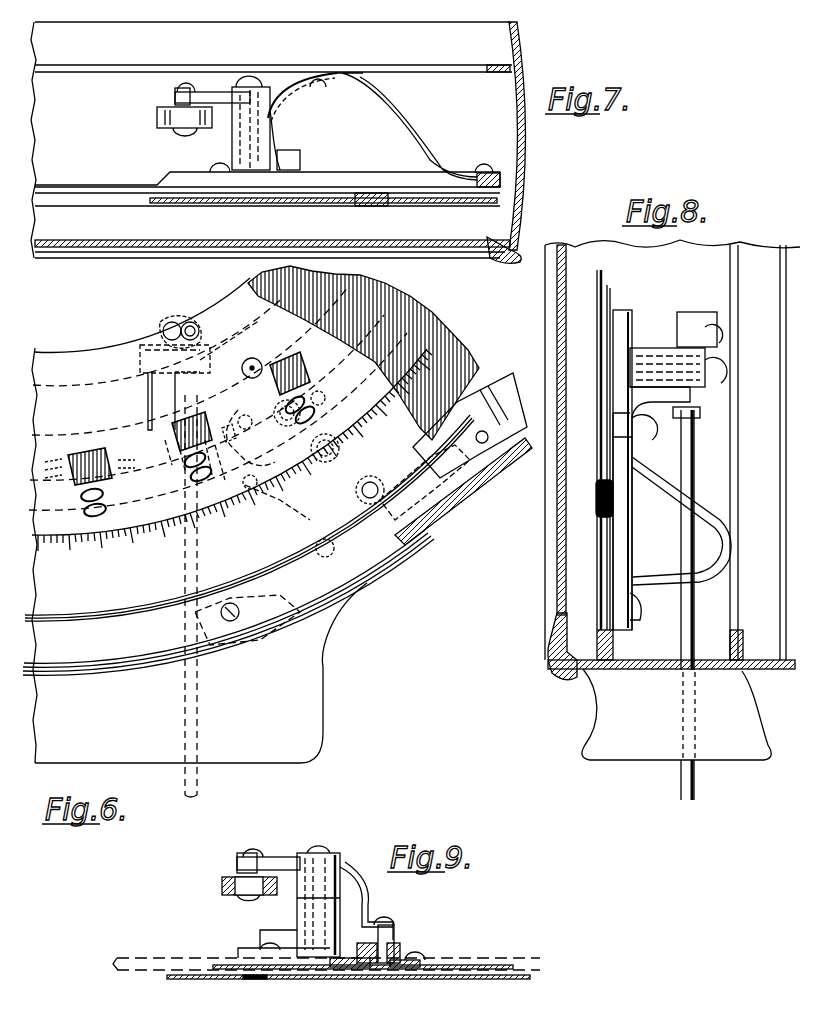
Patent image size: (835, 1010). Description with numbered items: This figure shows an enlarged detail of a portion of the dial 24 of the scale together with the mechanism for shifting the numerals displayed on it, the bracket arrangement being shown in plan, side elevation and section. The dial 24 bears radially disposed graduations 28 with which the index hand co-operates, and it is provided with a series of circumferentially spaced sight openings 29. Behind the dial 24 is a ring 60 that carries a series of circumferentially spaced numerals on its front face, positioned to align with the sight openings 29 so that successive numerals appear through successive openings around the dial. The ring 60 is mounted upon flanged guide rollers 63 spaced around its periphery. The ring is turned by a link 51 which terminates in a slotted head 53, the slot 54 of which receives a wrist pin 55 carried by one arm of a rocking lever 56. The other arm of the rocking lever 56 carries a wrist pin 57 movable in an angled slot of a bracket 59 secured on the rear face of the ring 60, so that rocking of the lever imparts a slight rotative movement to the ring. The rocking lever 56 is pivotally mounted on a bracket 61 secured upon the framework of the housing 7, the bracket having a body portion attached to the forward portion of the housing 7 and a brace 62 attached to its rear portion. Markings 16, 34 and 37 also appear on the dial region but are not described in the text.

In FIG. 8, the housing 7 is at (613, 685).
In FIG. 6, the housing 7 is at (325, 662).
In FIG. 6, the contact 16 is at (229, 429).
In FIG. 6, the dial 24 is at (52, 355).
In FIG. 9, the dial 24 is at (346, 978).
In FIG. 6, the graduations 28 is at (122, 548).
In FIG. 6, the sight openings 29 is at (100, 447).
In FIG. 9, the sight openings 29 is at (253, 977).
In FIG. 6, the contact segment 34 is at (340, 334).
In FIG. 6, the contact segment 37 is at (54, 469).
In FIG. 6, the link 51 is at (198, 791).
In FIG. 6, the slotted head 53 is at (170, 322).
In FIG. 9, the slotted head 53 is at (222, 883).
In FIG. 6, the slot 54 is at (163, 330).
In FIG. 6, the wrist pin 55 is at (190, 322).
In FIG. 9, the wrist pin 55 is at (243, 897).
In FIG. 6, the rocking lever 56 is at (215, 355).
In FIG. 9, the rocking lever 56 is at (343, 873).
In FIG. 9, the wrist pin 57 is at (394, 943).
In FIG. 6, the bracket 59 is at (360, 311).
In FIG. 9, the bracket 59 is at (402, 957).
In FIG. 6, the ring 60 is at (430, 336).
In FIG. 9, the ring 60 is at (478, 963).
In FIG. 7, the bracket 61 is at (403, 144).
In FIG. 8, the bracket 61 is at (668, 596).
In FIG. 6, the bracket 61 is at (467, 411).
In FIG. 9, the bracket 61 is at (283, 940).
In FIG. 7, the brace 62 is at (286, 97).
In FIG. 8, the brace 62 is at (698, 507).
In FIG. 7, the flanged guide rollers 63 is at (372, 209).
In FIG. 8, the flanged guide rollers 63 is at (597, 500).
In FIG. 6, the flanged guide rollers 63 is at (438, 519).